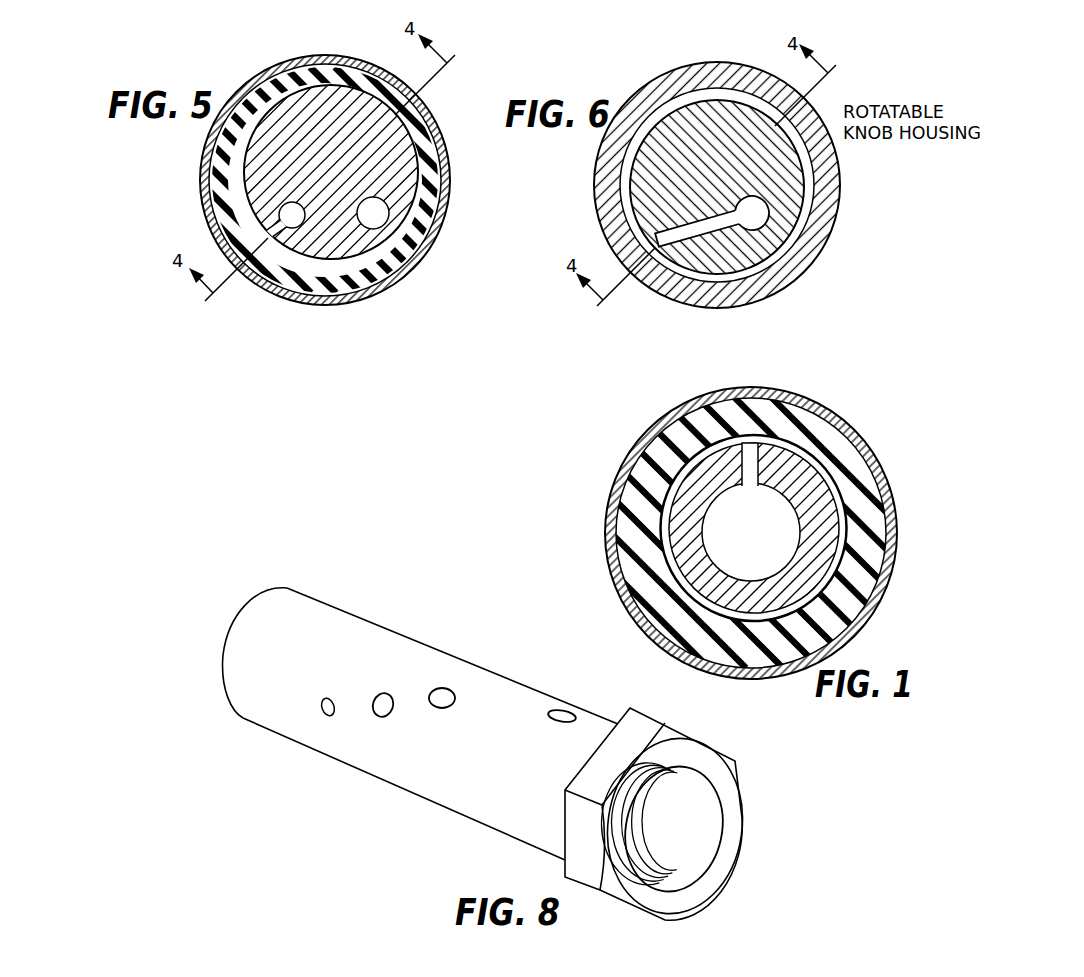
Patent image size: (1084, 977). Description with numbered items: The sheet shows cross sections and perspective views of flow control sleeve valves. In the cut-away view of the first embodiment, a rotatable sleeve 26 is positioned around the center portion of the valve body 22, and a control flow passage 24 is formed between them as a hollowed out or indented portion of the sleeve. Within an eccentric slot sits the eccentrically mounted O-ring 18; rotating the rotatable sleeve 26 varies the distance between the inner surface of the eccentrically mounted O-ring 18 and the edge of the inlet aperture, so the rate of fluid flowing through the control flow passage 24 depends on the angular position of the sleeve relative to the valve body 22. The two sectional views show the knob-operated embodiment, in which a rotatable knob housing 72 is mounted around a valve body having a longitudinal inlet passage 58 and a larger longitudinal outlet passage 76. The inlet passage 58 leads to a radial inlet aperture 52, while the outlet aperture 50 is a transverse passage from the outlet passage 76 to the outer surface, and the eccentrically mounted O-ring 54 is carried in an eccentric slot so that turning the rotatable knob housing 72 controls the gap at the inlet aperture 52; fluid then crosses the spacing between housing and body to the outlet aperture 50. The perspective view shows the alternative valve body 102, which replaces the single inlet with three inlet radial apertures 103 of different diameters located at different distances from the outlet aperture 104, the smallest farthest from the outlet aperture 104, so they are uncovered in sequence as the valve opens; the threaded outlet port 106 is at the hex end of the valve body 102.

In FIG. 5, the rotatable knob housing 72 is at (336, 60).
In FIG. 6, the rotatable knob housing 72 is at (716, 66).
In FIG. 5, the inlet passage 58 is at (317, 383).
In FIG. 6, the inlet passage 58 is at (642, 224).
In FIG. 5, the inlet aperture 52 is at (283, 232).
In FIG. 5, the rotatable sleeve 26 is at (382, 227).
In FIG. 1, the rotatable sleeve 26 is at (612, 513).
In FIG. 5, the eccentrically mounted O-ring 54 is at (363, 278).
In FIG. 6, the outlet passage 76 is at (768, 217).
In FIG. 6, the outlet aperture 50 is at (695, 240).
In FIG. 1, the outlet aperture 50 is at (805, 375).
In FIG. 1, the control flow passage 24 is at (698, 445).
In FIG. 1, the eccentrically mounted O-ring 18 is at (648, 467).
In FIG. 1, the valve body 22 is at (670, 551).
In FIG. 8, the valve body 102 is at (248, 709).
In FIG. 8, the inlet radial apertures 103 is at (442, 709).
In FIG. 8, the outlet aperture 104 is at (560, 724).
In FIG. 8, the outlet port 106 is at (707, 851).